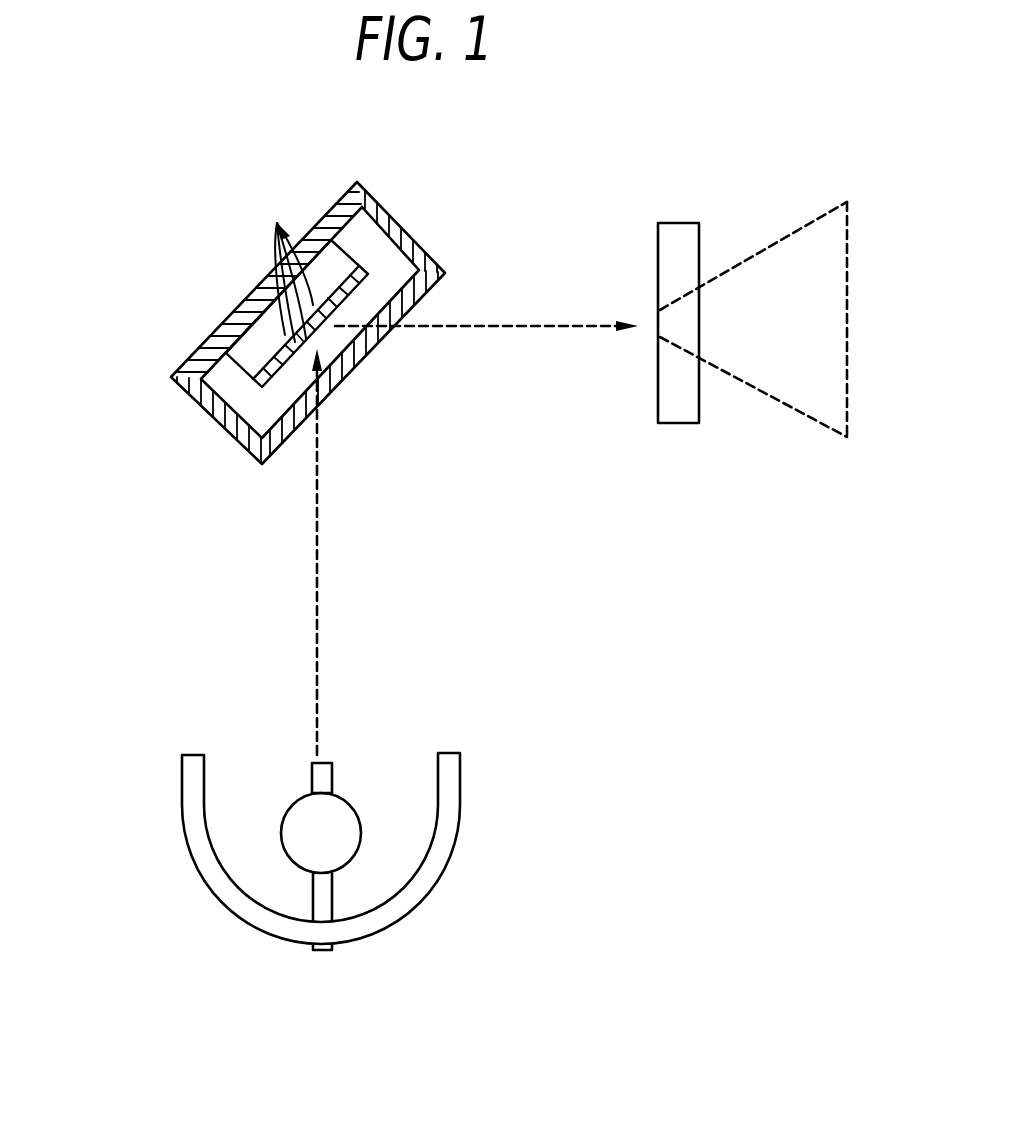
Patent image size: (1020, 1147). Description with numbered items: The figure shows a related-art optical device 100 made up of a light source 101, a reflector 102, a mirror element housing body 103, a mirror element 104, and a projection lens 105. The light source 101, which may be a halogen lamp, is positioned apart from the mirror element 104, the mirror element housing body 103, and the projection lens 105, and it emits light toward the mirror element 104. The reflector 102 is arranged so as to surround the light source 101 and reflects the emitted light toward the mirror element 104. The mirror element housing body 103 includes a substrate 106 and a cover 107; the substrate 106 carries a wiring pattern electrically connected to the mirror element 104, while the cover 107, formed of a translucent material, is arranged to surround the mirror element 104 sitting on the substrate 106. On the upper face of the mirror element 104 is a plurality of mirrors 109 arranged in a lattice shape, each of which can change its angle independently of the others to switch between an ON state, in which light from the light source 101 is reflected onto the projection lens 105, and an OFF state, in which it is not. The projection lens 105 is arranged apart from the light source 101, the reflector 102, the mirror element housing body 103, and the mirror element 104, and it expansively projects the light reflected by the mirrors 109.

The optical device 100 is at (152, 190).
The light source 101 is at (343, 842).
The reflector 102 is at (438, 870).
The mirror element housing body 103 is at (92, 342).
The mirror element 104 is at (372, 250).
The projection lens 105 is at (681, 232).
The substrate 106 is at (172, 378).
The cover 107 is at (197, 408).
The mirrors 109 is at (284, 264).